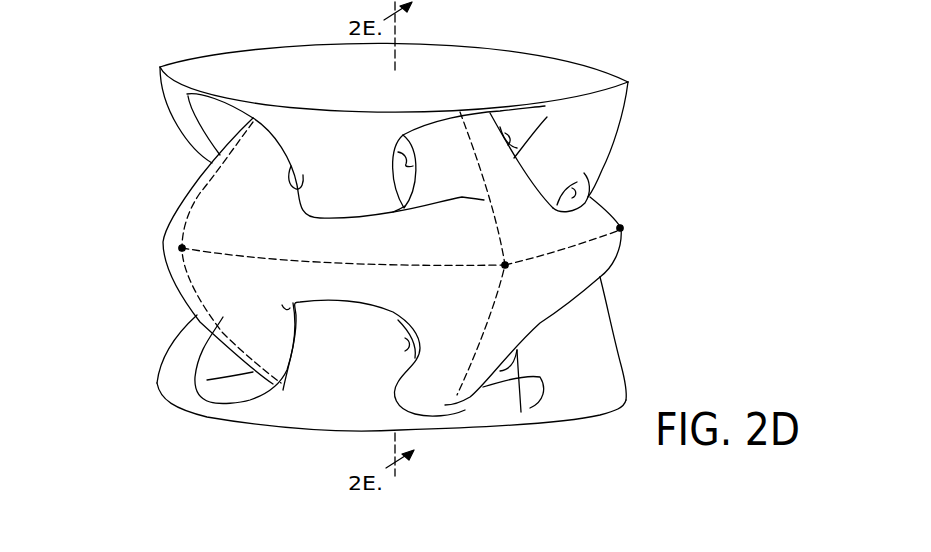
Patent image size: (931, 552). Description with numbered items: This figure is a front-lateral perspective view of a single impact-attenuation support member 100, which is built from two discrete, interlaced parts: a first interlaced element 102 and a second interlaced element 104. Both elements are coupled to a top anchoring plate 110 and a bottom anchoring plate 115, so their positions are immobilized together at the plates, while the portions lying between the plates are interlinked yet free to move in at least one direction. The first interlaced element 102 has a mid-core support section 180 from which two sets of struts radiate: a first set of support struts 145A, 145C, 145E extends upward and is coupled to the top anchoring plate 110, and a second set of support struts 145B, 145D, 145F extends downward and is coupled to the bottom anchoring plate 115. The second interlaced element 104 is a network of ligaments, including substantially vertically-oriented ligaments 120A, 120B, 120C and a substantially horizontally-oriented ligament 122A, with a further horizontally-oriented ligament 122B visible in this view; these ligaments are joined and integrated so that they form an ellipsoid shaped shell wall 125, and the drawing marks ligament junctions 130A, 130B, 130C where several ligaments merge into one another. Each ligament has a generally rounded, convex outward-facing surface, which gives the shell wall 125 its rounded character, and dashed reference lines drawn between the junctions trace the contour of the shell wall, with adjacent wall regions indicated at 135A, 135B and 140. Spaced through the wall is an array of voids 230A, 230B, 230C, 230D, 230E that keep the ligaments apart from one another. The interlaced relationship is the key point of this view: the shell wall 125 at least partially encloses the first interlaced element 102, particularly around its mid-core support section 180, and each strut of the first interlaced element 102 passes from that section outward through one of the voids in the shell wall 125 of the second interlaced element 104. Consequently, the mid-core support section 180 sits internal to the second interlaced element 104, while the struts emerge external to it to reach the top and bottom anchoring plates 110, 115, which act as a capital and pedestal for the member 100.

The impact-attenuation support member 100 is at (668, 92).
The first interlaced element 102 is at (600, 380).
The second interlaced element 104 is at (608, 278).
The top anchoring plate 110 is at (538, 58).
The bottom anchoring plate 115 is at (555, 422).
The vertically-oriented ligament 120A is at (184, 198).
The vertically-oriented ligament 120B is at (405, 204).
The vertically-oriented ligament 120C is at (597, 168).
The horizontally-oriented ligament 122A is at (380, 280).
The strand crossing 122B is at (572, 290).
The ellipsoid shaped shell wall 125 is at (616, 246).
The ligament junction 130A is at (182, 249).
The ligament junction 130B is at (505, 265).
The vertex point 130C is at (622, 228).
The upper region 135A is at (557, 234).
The lower region 135B is at (557, 294).
The central region 140 is at (347, 292).
The support strut 145A is at (184, 120).
The support strut 145B is at (163, 368).
The support strut 145C is at (347, 133).
The support strut 145D is at (337, 393).
The support strut 145E is at (590, 128).
The support strut 145F is at (580, 352).
The mid-core support section 180 is at (318, 208).
The void 230A is at (396, 171).
The tongue 230B is at (514, 140).
The void 230C is at (403, 333).
The tongue 230D is at (521, 412).
The tongue 230E is at (590, 185).